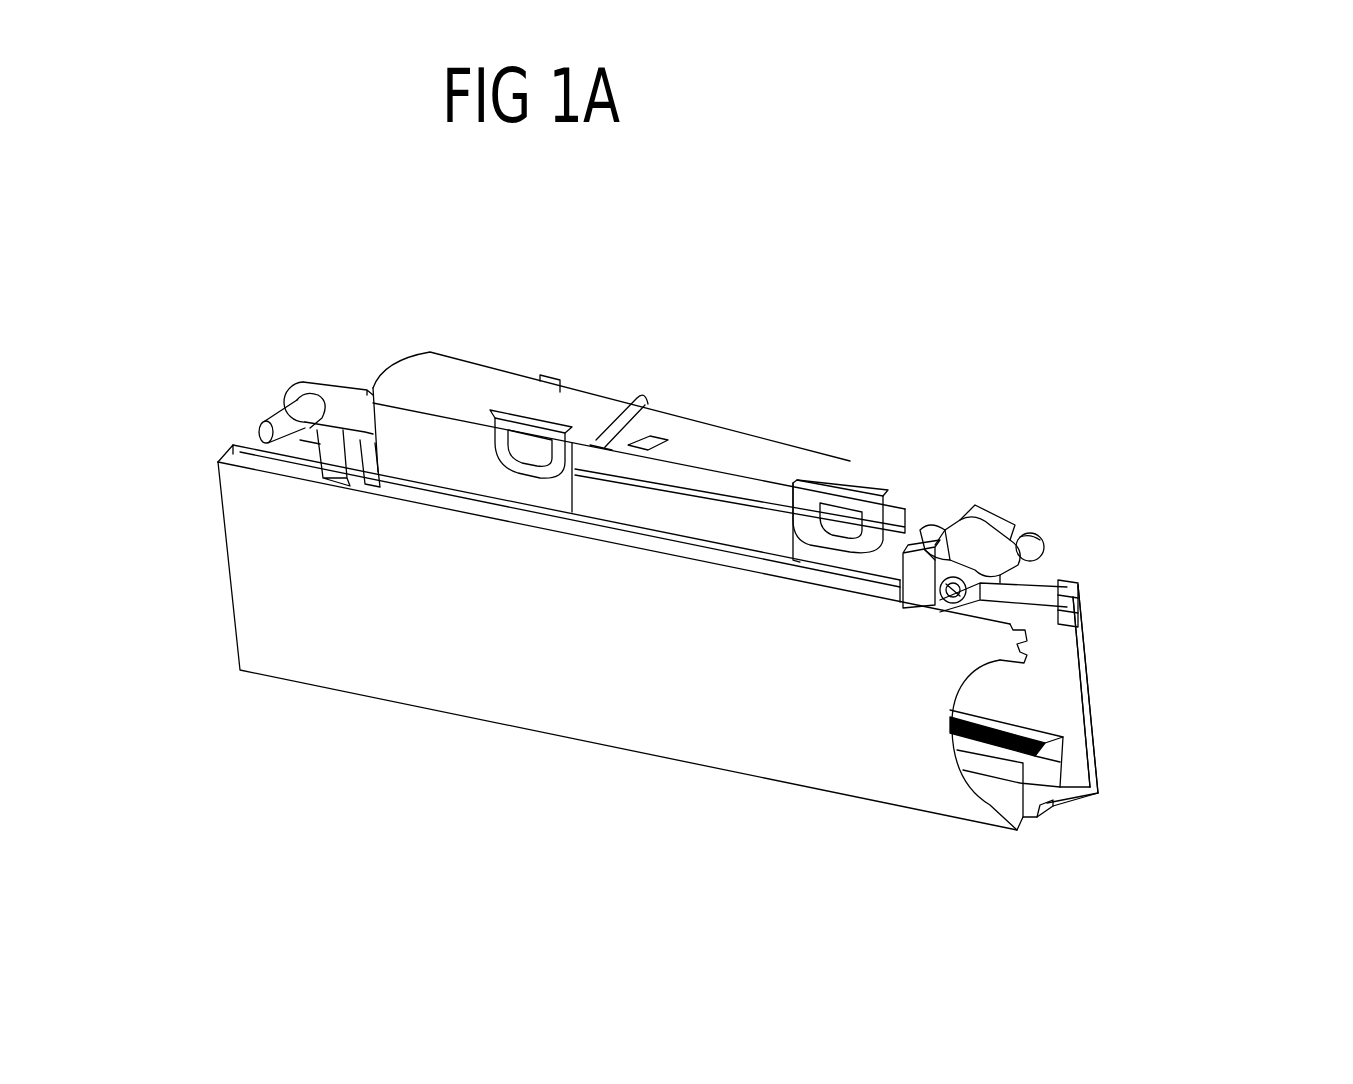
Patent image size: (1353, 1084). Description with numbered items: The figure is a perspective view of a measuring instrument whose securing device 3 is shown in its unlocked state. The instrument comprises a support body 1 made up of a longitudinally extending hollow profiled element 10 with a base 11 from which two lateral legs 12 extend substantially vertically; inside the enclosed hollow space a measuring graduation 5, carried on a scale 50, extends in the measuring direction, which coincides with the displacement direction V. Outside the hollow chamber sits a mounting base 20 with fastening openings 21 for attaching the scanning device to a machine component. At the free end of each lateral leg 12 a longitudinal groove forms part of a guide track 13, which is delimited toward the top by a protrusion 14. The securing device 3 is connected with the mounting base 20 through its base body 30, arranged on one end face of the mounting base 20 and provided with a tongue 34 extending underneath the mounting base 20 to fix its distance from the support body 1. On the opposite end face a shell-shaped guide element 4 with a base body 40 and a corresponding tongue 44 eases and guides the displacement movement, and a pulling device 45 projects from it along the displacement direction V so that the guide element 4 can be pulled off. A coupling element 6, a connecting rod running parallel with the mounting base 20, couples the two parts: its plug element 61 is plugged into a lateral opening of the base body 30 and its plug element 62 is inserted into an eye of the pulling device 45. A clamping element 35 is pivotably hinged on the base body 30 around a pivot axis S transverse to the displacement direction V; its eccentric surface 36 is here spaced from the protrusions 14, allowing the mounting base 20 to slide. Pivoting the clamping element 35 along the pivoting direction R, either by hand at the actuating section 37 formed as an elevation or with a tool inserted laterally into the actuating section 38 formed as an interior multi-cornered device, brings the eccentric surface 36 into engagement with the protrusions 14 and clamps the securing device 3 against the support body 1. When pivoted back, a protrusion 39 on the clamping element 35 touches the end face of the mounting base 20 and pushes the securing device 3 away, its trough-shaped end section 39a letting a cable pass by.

The support body 1 is at (232, 623).
The securing device 3 is at (1073, 492).
The guide element 4 is at (333, 461).
The measuring graduation 5 is at (1030, 728).
The coupling element 6 is at (337, 373).
The hollow profiled element 10 is at (1093, 723).
The base 11 is at (1055, 797).
The lateral legs 12 is at (1087, 652).
The guide track 13 is at (1060, 620).
The protrusion 14 is at (1060, 583).
The mounting base 20 is at (725, 453).
The fastening openings 21 is at (543, 450).
The base body 30 is at (907, 571).
The tongue 34 is at (873, 598).
The clamping element 35 is at (1022, 505).
The eccentric surface 36 is at (978, 622).
The actuating section 37 is at (995, 523).
The actuating section 38 is at (935, 608).
The protrusion 39 is at (965, 510).
The end section 39a is at (937, 530).
The base body 40 is at (353, 463).
The tongue 44 is at (382, 490).
The pulling device 45 is at (280, 418).
The scale 50 is at (1057, 755).
The plug element 61 is at (1040, 547).
The plug element 62 is at (303, 395).
The pivoting direction R is at (925, 525).
The pivot axis S is at (913, 602).
The displacement direction V is at (636, 902).